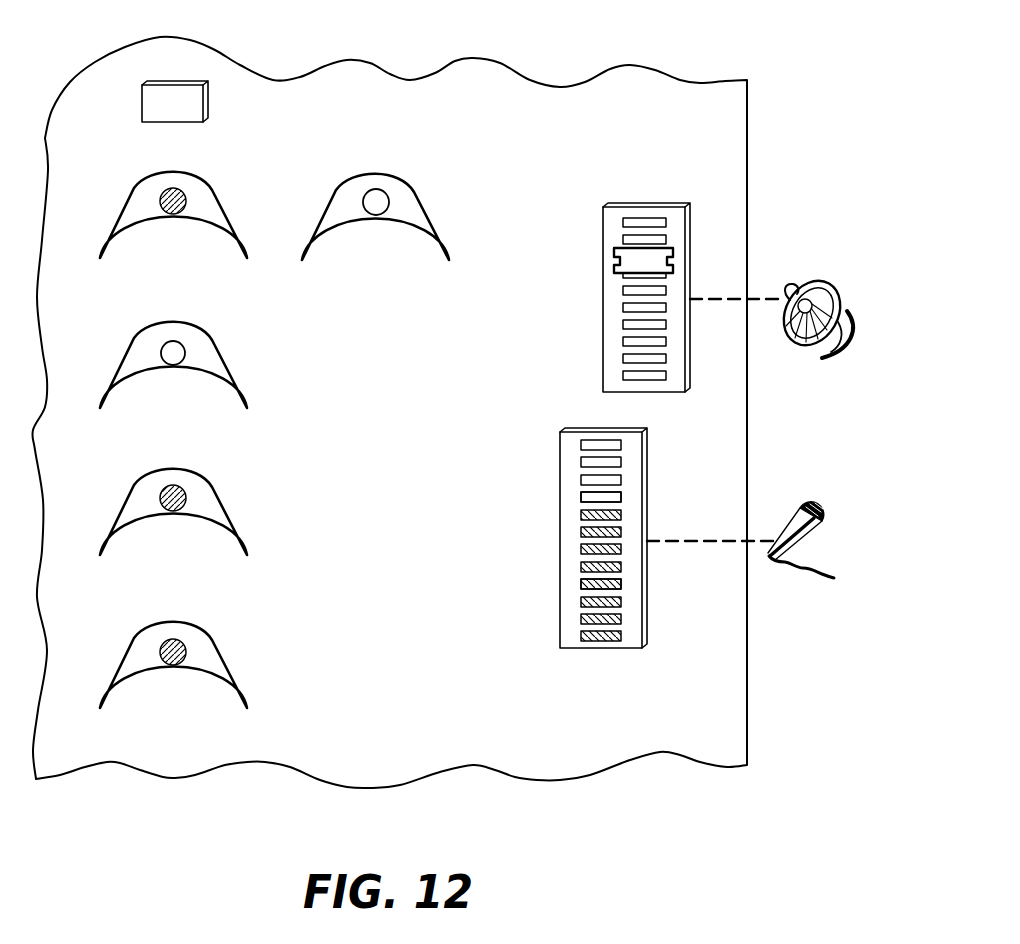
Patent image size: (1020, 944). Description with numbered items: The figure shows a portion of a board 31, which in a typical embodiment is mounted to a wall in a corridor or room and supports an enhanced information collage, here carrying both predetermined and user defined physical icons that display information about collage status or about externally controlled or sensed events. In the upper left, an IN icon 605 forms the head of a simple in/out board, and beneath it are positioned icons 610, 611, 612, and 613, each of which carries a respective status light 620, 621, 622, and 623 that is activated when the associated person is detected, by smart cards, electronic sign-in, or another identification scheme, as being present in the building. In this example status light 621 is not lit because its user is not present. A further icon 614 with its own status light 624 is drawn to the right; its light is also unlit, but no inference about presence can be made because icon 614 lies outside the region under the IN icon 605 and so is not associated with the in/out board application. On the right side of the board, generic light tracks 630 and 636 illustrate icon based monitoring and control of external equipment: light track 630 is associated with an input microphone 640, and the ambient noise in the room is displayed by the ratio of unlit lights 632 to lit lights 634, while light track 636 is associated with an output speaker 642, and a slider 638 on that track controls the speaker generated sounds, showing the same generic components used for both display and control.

The board 31 is at (653, 82).
The IN icon 605 is at (165, 84).
The icon 610 is at (224, 204).
The icon 611 is at (235, 370).
The icon 612 is at (235, 521).
The icon 613 is at (238, 675).
The icon 614 is at (437, 224).
The status light 620 is at (180, 192).
The status light 621 is at (186, 353).
The status light 622 is at (186, 496).
The status light 623 is at (186, 646).
The status light 624 is at (380, 198).
The light track 630 is at (576, 428).
The unlit lights 632 is at (588, 497).
The lit lights 634 is at (588, 583).
The light track 636 is at (690, 348).
The slider 638 is at (620, 262).
The input microphone 640 is at (799, 538).
The output speaker 642 is at (819, 283).